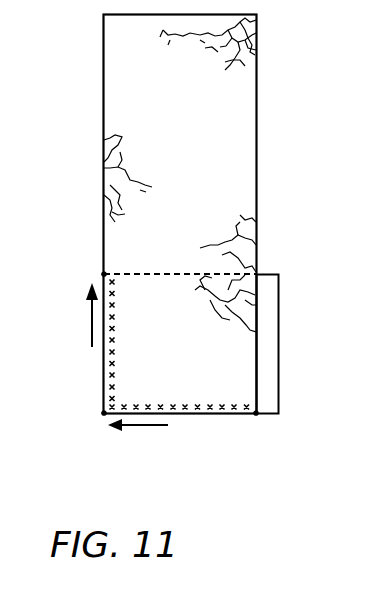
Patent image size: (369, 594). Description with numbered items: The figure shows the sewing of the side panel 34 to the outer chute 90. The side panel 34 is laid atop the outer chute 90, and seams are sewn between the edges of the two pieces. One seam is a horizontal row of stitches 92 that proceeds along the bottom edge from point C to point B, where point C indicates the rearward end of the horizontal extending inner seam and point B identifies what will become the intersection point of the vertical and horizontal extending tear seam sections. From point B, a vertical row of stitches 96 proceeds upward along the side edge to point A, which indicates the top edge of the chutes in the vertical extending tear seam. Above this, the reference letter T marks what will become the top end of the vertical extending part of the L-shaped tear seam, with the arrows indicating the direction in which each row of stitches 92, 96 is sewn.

The top end of the vertical extending part of the L-shaped tear seam T is at (103, 118).
The side panel 34 is at (236, 82).
The outer chute 90 is at (264, 296).
The horizontal row of stitches 92 is at (148, 410).
The vertical row of stitches 96 is at (112, 365).
The top edge of the chutes in the vertical extending tear seam A is at (103, 274).
The intersection point of the vertical and horizontal extending tear seam sections B is at (103, 413).
The rearward end of the horizontal extending inner seam C is at (256, 413).